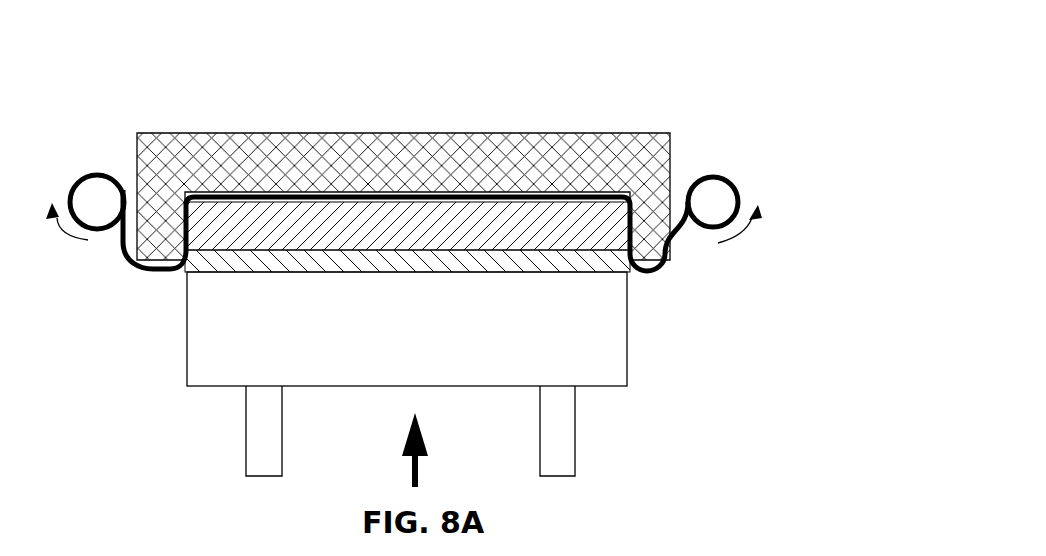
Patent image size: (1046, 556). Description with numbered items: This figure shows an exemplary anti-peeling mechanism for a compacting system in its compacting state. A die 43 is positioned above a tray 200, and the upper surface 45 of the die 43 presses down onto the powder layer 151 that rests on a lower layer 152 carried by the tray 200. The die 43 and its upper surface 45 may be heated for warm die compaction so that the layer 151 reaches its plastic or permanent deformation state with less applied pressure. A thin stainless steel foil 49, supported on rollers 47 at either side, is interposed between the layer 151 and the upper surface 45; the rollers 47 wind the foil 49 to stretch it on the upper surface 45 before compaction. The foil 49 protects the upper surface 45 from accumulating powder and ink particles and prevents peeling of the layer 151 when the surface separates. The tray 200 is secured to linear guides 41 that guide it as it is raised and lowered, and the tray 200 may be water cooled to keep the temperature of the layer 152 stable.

The die 43 is at (153, 77).
The upper surface 45 is at (503, 193).
The rollers 47 is at (745, 186).
The foil 49 is at (648, 273).
The layer 151 is at (232, 240).
The layer 152 is at (373, 262).
The tray 200 is at (605, 332).
The linear guides 41 is at (575, 458).